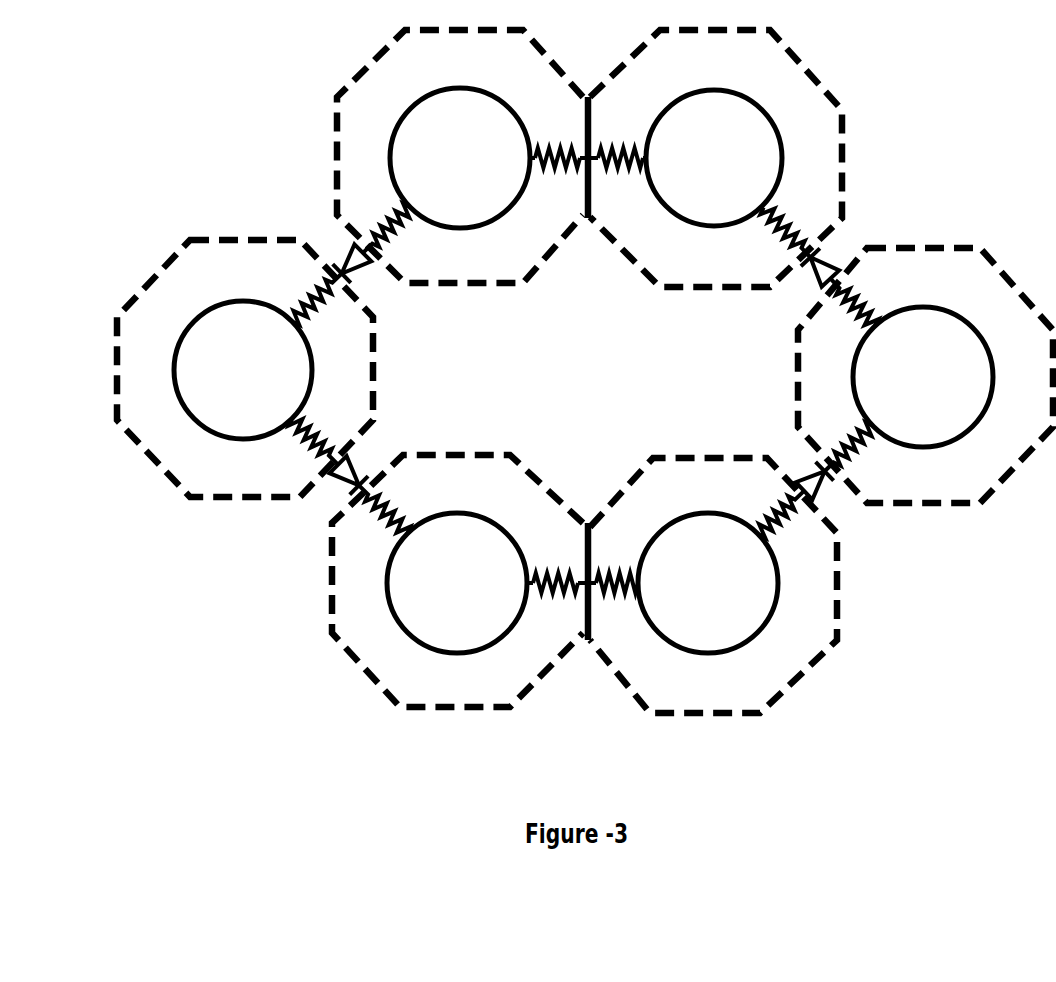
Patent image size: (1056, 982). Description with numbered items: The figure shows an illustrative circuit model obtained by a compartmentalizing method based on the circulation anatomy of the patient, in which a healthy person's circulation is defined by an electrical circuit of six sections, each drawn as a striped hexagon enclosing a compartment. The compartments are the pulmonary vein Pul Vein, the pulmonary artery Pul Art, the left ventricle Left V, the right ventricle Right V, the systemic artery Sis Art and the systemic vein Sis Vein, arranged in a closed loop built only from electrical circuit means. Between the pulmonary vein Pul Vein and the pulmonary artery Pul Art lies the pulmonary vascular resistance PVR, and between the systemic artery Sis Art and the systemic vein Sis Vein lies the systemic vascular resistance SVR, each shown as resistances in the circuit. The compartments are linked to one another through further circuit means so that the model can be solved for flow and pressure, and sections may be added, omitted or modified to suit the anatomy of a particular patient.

The pulmonary vascular resistance PVR is at (588, 159).
The systemic vascular resistance SVR is at (583, 586).
The pulmonary vein compartment Pul Vein is at (460, 156).
The pulmonary artery compartment Pul Art is at (716, 158).
The left ventricle compartment Left V is at (245, 368).
The right ventricle compartment Right V is at (925, 375).
The systemic artery compartment Sis Art is at (457, 581).
The systemic vein compartment Sis Vein is at (713, 585).